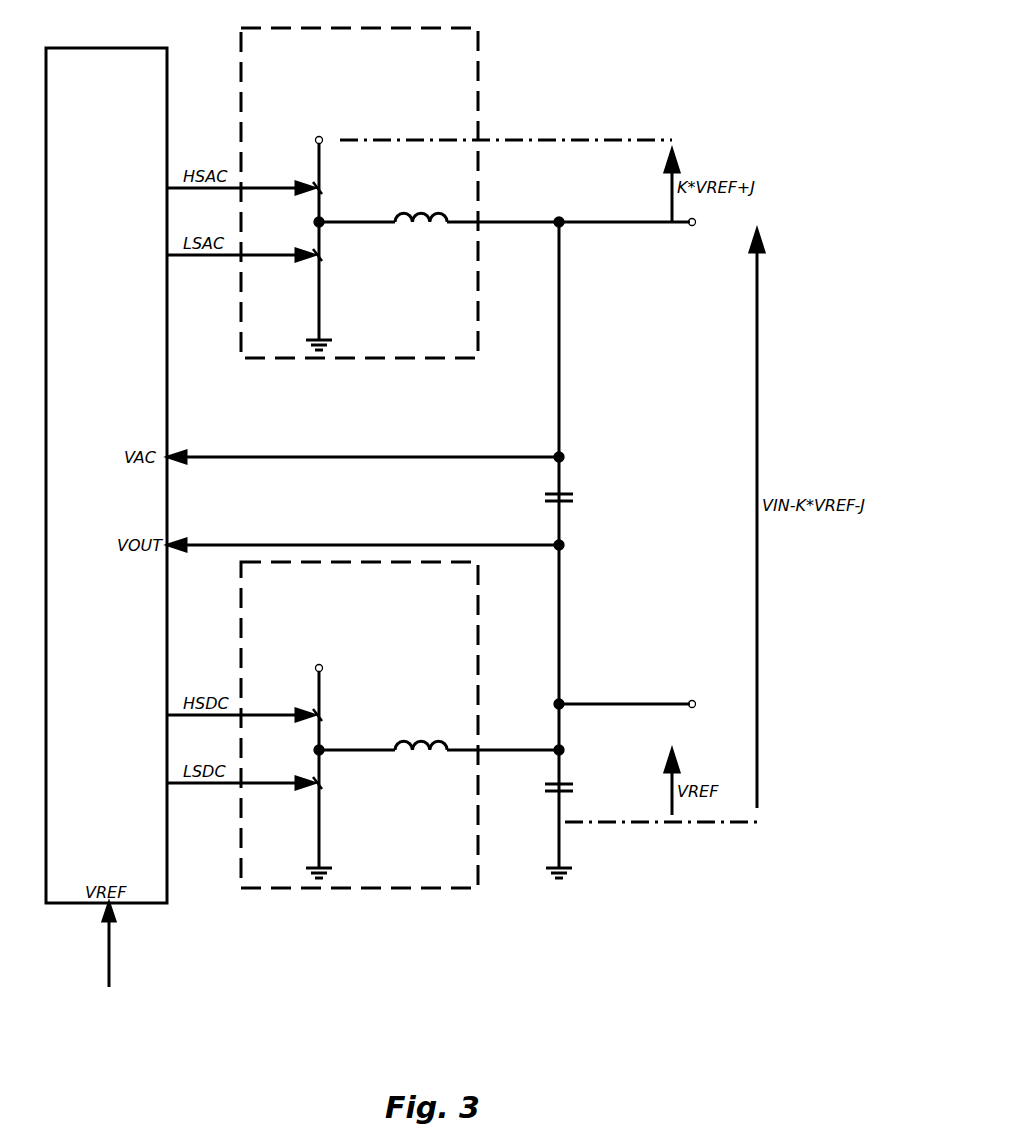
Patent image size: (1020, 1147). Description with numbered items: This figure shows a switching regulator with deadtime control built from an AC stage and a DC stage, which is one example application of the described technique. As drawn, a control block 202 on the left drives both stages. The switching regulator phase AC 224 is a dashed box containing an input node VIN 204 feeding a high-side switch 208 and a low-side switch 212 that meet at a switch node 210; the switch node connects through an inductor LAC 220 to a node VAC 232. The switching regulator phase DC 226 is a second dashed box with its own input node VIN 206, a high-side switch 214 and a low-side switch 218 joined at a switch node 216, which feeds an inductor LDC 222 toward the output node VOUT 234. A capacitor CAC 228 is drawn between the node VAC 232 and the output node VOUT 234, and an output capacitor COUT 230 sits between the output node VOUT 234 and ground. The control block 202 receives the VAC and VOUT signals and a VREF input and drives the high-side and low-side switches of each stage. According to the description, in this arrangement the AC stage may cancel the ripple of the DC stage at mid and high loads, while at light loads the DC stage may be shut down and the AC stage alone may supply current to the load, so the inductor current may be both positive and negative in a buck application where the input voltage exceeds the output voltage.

The control 202 is at (73, 47).
The input voltage node VIN of phase AC 204 is at (315, 140).
The input voltage node VIN of phase DC 206 is at (315, 668).
The high-side switch of phase AC 208 is at (322, 187).
The switch node of phase AC 210 is at (323, 226).
The low-side switch of phase AC 212 is at (322, 258).
The high-side switch of phase DC 214 is at (322, 715).
The switch node of phase DC 216 is at (323, 754).
The low-side switch of phase DC 218 is at (322, 786).
The inductor LAC 220 is at (424, 217).
The inductor LDC 222 is at (424, 745).
The switching regulator phase AC 224 is at (480, 80).
The switching regulator phase DC 226 is at (480, 606).
The capacitor CAC 228 is at (547, 502).
The output capacitor COUT 230 is at (547, 792).
The node VAC 232 is at (562, 220).
The output node VOUT 234 is at (562, 702).